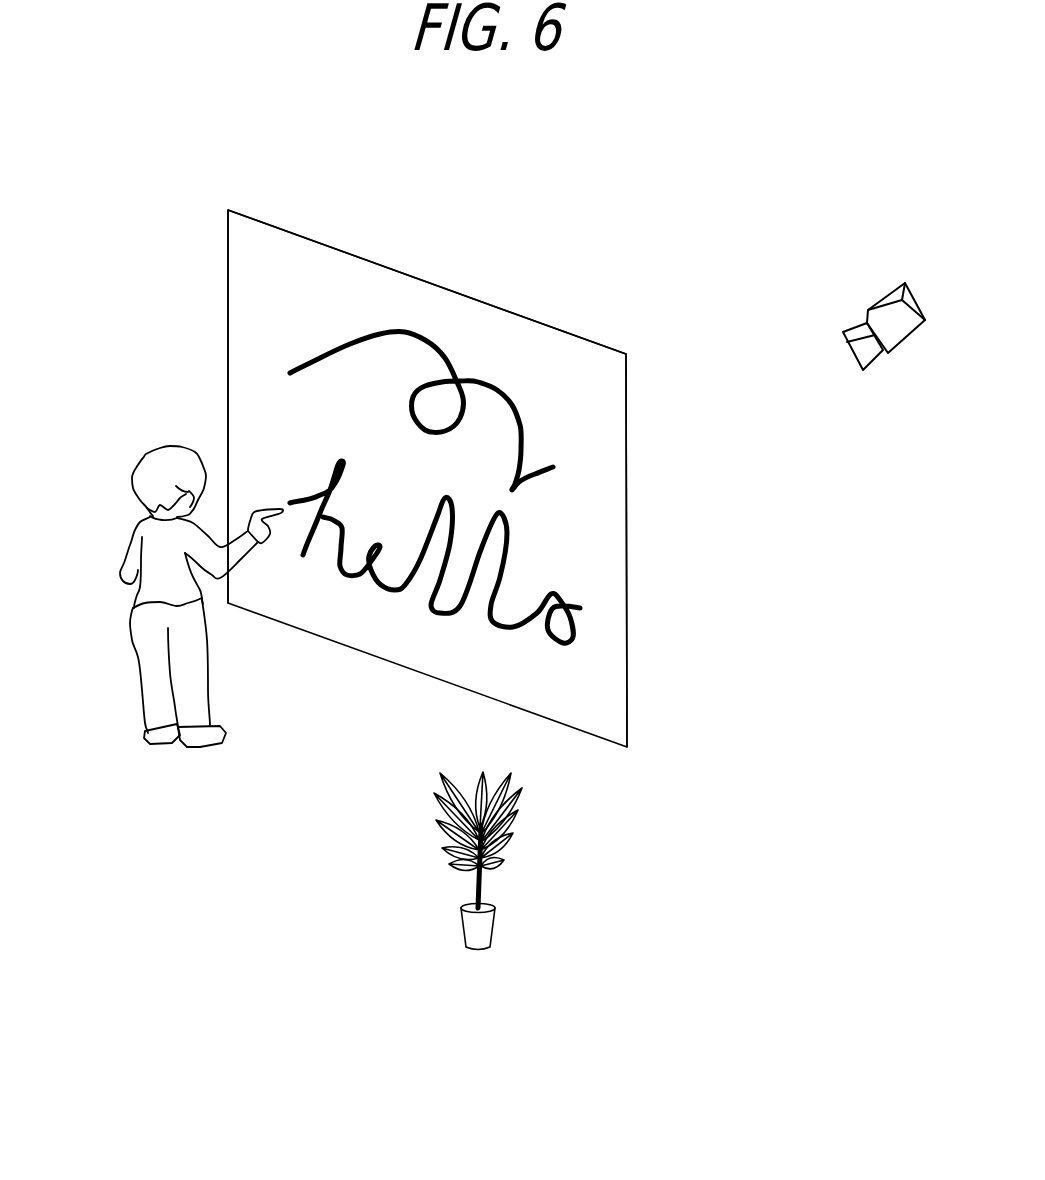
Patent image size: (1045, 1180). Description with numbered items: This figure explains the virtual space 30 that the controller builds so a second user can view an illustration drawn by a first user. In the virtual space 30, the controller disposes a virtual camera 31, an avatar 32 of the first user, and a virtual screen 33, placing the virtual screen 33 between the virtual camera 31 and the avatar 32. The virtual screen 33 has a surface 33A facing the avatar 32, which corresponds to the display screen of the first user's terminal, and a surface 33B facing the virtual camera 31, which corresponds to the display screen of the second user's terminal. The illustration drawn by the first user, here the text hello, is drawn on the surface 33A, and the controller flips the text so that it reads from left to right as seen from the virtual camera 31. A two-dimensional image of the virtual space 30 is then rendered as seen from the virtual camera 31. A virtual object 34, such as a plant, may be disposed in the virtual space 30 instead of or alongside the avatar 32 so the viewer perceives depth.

The virtual space 30 is at (665, 201).
The virtual camera 31 is at (890, 290).
The avatar 32 is at (137, 650).
The virtual screen 33 is at (290, 232).
The surface 33A is at (242, 287).
The surface 33B is at (627, 464).
The virtual object 34 is at (462, 927).